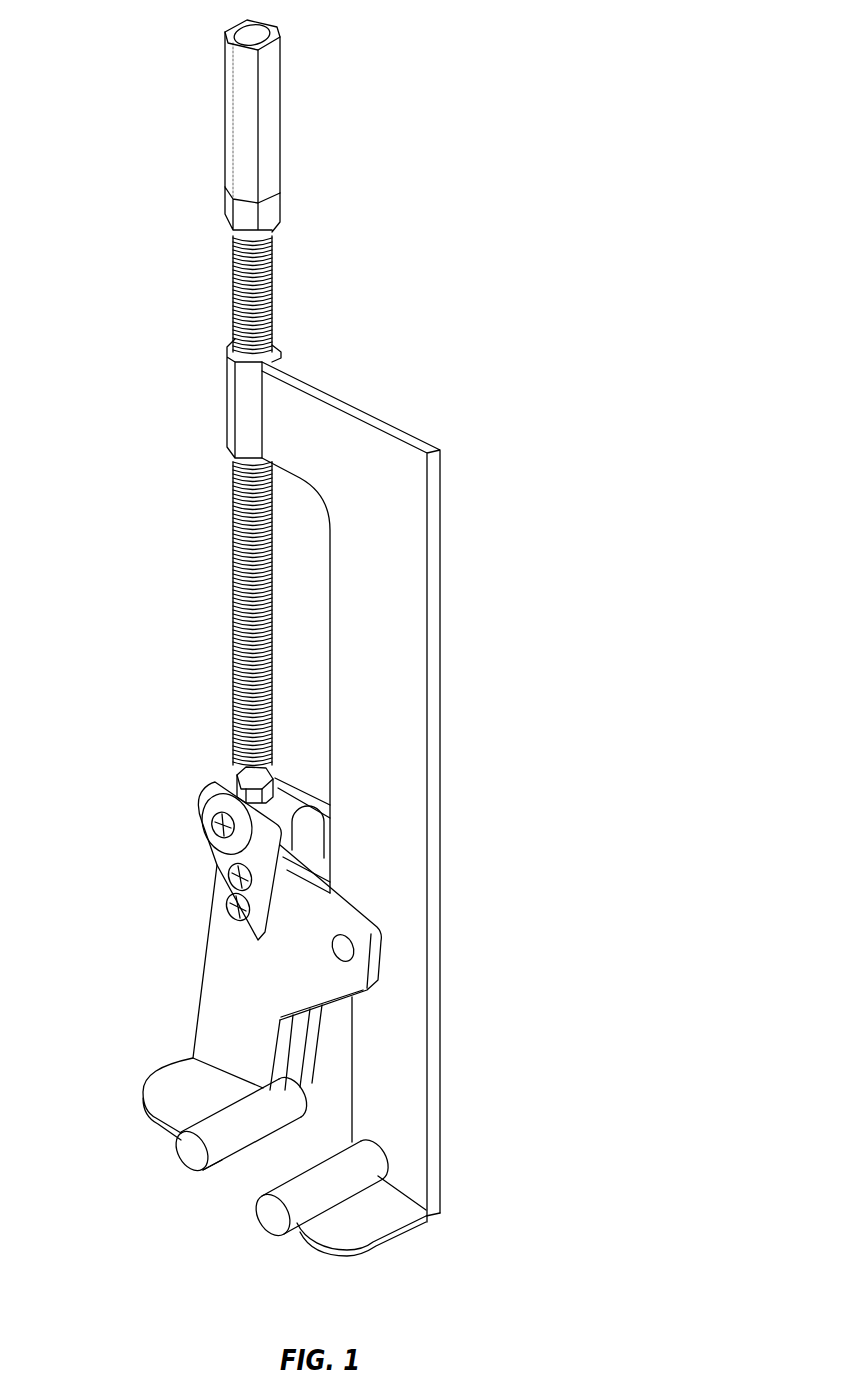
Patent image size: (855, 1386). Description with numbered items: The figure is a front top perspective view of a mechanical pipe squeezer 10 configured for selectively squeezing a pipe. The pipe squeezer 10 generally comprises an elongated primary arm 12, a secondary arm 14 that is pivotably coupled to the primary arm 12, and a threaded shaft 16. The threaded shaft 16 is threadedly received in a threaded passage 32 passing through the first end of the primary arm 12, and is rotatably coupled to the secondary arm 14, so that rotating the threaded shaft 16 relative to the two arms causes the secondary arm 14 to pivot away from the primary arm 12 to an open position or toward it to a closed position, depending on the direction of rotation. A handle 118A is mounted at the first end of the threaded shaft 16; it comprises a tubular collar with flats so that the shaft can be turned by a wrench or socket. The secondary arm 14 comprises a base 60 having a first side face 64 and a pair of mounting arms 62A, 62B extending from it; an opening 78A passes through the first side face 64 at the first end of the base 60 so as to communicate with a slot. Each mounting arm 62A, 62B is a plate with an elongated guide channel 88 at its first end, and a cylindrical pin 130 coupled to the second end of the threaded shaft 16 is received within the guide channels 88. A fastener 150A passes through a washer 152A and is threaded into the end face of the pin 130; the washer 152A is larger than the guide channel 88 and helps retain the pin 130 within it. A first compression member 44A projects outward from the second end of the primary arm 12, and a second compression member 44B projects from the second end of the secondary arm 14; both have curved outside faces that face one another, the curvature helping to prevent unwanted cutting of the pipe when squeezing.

The mechanical pipe squeezer 10 is at (466, 47).
The handle 118A is at (273, 128).
The threaded shaft 16 is at (244, 580).
The threaded passage 32 is at (279, 353).
The primary arm 12 is at (407, 870).
The cylindrical pin 130 is at (277, 800).
The guide channel 88 is at (292, 802).
The mounting arm 62B is at (310, 818).
The mounting arm 62A is at (210, 785).
The washer 152A is at (212, 810).
The fastener 150A is at (223, 837).
The secondary arm 14 is at (230, 950).
The first side face 64 is at (222, 1000).
The second compression member 44B is at (185, 1157).
The base 60 is at (310, 988).
The opening 78A is at (350, 947).
The first compression member 44A is at (270, 1222).